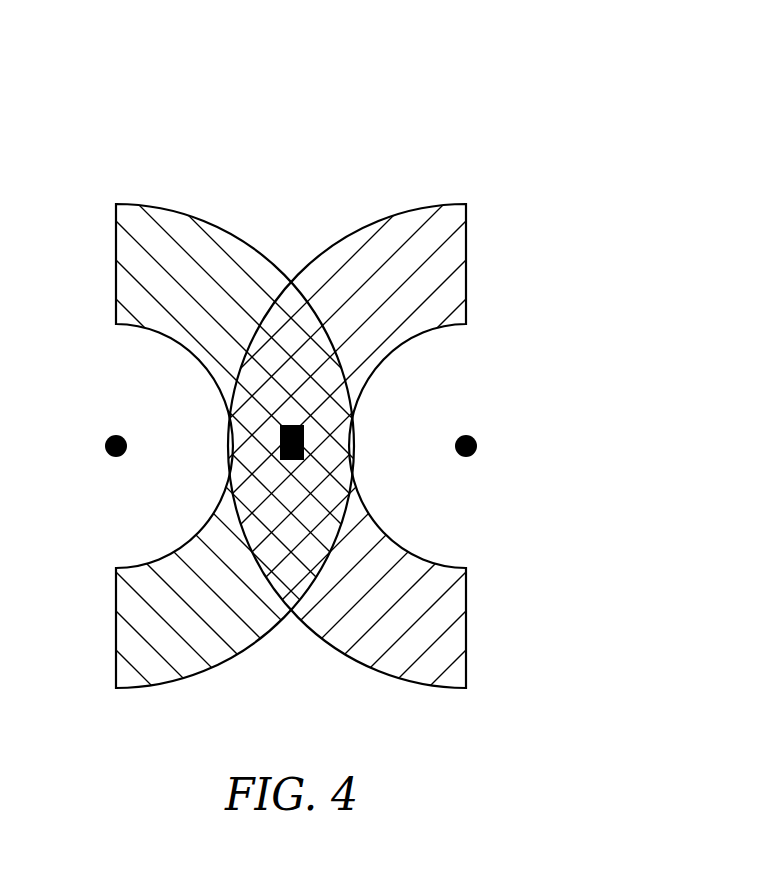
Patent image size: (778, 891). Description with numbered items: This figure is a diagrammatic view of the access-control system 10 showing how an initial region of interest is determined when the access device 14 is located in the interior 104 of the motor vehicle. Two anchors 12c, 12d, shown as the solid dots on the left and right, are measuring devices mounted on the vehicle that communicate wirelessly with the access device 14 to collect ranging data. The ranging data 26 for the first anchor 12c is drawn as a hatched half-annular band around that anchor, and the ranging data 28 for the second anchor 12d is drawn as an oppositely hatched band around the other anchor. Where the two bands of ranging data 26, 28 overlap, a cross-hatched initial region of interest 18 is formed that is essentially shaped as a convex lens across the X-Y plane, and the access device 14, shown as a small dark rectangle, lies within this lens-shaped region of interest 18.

The access-control system 10 is at (533, 156).
The anchor 12c is at (114, 420).
The anchor 12d is at (492, 445).
The access device 14 is at (316, 433).
The initial region of interest 18 is at (312, 481).
The ranging data 26 is at (175, 222).
The ranging data 28 is at (402, 222).
The interior 104 is at (582, 363).